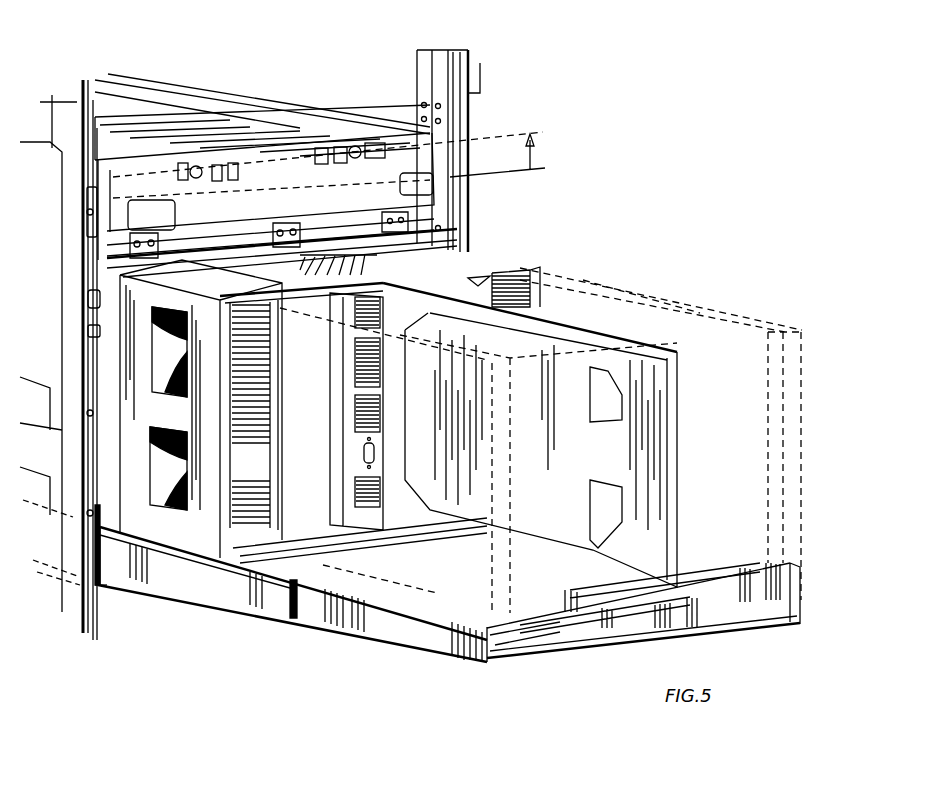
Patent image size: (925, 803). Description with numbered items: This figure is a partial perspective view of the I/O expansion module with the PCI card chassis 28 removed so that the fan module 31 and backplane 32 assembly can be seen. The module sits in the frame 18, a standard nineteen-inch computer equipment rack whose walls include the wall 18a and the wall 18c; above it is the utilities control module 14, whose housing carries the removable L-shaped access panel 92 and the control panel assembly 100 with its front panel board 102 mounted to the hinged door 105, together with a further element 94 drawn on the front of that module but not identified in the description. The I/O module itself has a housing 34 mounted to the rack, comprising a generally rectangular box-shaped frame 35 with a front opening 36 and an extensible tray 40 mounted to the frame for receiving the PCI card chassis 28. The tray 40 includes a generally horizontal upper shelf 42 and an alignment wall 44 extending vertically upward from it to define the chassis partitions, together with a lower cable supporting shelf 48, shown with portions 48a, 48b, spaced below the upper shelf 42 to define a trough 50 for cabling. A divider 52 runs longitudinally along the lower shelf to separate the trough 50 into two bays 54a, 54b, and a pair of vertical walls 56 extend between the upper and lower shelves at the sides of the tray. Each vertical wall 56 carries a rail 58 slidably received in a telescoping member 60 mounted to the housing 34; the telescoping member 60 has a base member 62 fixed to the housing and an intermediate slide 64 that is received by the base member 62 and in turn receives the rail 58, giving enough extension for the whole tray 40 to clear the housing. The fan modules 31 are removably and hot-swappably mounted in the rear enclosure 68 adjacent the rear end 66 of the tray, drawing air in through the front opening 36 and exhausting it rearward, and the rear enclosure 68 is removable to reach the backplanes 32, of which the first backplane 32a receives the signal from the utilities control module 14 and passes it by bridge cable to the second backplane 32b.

The utilities control module 14 is at (350, 103).
The frame 18 is at (460, 80).
The wall 18a is at (50, 97).
The wall 18c is at (443, 117).
The PCI card chassis 28 is at (578, 272).
The fan module 31 is at (157, 383).
The backplane 32 is at (570, 307).
The first backplane 32a is at (318, 488).
The second backplane 32b is at (510, 268).
The housing 34 is at (588, 207).
The frame 35 is at (478, 278).
The front opening 36 is at (100, 308).
The extensible tray 40 is at (360, 550).
The upper shelf 42 is at (297, 538).
The alignment wall 44 is at (618, 335).
The lower cable supporting shelf 48 is at (507, 613).
The lower cable supporting shelf 48a is at (558, 640).
The lower cable supporting shelf 48b is at (715, 550).
The trough 50 is at (743, 630).
The divider 52 is at (662, 625).
The bay 54a is at (507, 643).
The bay 54b is at (757, 618).
The vertical wall 56 is at (400, 586).
The rail 58 is at (408, 605).
The telescoping member 60 is at (265, 593).
The base member 62 is at (103, 578).
The intermediate slide 64 is at (257, 613).
The rear end 66 is at (290, 600).
The rear enclosure 68 is at (118, 332).
The access panel 92 is at (302, 165).
The bracket 94 is at (150, 213).
The control panel assembly 100 is at (303, 127).
The front panel board 102 is at (253, 193).
The door 105 is at (298, 128).